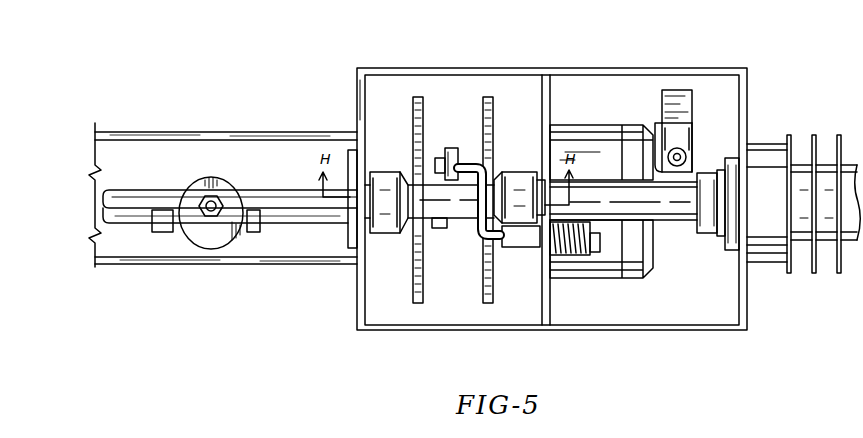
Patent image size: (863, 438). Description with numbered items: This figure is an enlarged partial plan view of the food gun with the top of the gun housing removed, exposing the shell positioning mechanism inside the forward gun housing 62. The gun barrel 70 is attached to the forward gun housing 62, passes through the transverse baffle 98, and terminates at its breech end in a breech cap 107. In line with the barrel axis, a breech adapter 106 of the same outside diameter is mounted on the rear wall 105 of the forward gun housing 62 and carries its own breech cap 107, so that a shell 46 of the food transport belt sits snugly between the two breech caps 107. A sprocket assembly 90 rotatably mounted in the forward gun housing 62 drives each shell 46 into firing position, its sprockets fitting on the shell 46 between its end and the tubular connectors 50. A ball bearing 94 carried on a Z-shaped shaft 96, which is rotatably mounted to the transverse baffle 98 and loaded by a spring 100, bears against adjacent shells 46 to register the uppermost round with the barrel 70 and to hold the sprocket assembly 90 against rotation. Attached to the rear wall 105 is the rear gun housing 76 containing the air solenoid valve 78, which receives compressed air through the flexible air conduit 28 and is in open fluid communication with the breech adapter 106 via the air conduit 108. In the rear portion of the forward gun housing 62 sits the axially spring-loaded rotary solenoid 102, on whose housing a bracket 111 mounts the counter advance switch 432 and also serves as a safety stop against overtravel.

The flexible air conduit 28 is at (287, 224).
The shell 46 is at (456, 219).
The tubular connectors 50 is at (435, 168).
The forward gun housing 62 is at (588, 69).
The gun barrel 70 is at (682, 214).
The rear gun housing 76 is at (150, 260).
The air solenoid valve 78 is at (208, 243).
The sprocket assembly 90 is at (413, 290).
The ball bearing 94 is at (458, 150).
The Z-shaped shaft 96 is at (484, 163).
The transverse baffle 98 is at (545, 307).
The spring 100 is at (585, 258).
The axially spring-loaded rotary solenoid 102 is at (636, 326).
The rear wall 105 is at (357, 108).
The breech adapter 106 is at (365, 228).
The breech caps 107 is at (385, 178).
The air conduit 108 is at (250, 197).
The bracket 111 is at (655, 122).
The counter advance switch 432 is at (683, 130).